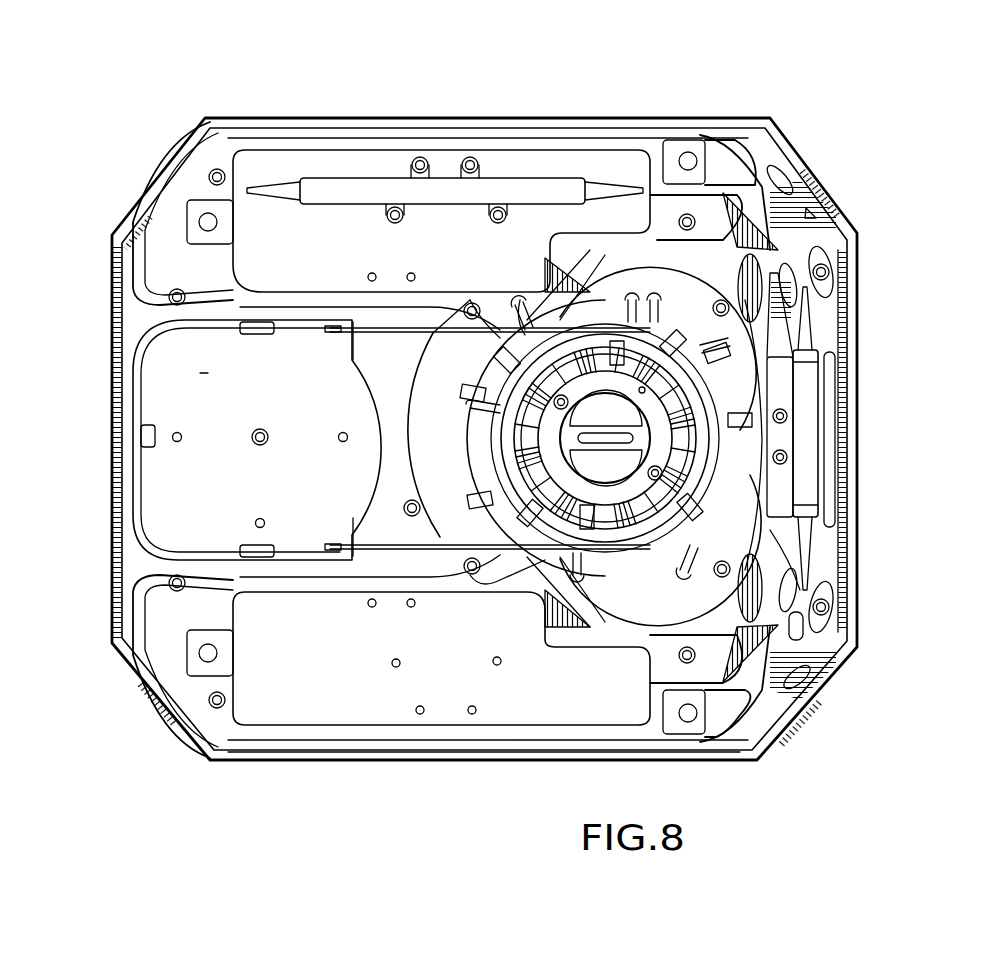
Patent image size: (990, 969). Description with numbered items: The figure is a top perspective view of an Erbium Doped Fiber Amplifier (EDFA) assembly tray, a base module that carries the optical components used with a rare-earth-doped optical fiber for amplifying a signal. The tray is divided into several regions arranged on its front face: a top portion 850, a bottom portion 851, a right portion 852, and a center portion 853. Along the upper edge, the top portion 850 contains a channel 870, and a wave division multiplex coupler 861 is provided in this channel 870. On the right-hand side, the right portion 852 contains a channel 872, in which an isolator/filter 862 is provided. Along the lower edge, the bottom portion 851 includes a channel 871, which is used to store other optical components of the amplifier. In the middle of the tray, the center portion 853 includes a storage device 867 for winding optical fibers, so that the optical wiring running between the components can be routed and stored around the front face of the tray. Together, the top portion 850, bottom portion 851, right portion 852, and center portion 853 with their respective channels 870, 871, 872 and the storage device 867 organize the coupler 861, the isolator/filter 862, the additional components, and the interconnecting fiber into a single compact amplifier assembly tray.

The top portion 850 is at (447, 103).
The bottom portion 851 is at (490, 765).
The right portion 852 is at (862, 378).
The center portion 853 is at (445, 433).
The wave division multiplex coupler 861 is at (540, 177).
The isolator/filter 862 is at (810, 330).
The storage device 867 is at (413, 462).
The channel 870 is at (340, 160).
The channel 871 is at (335, 695).
The channel 872 is at (827, 533).